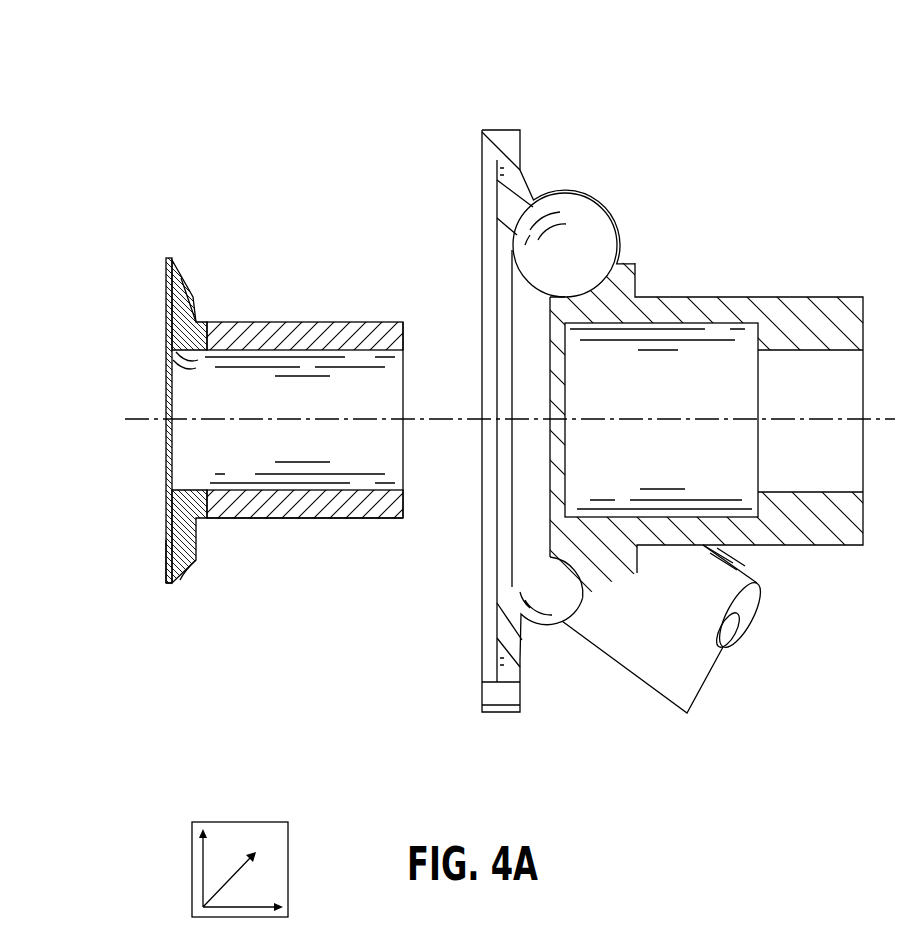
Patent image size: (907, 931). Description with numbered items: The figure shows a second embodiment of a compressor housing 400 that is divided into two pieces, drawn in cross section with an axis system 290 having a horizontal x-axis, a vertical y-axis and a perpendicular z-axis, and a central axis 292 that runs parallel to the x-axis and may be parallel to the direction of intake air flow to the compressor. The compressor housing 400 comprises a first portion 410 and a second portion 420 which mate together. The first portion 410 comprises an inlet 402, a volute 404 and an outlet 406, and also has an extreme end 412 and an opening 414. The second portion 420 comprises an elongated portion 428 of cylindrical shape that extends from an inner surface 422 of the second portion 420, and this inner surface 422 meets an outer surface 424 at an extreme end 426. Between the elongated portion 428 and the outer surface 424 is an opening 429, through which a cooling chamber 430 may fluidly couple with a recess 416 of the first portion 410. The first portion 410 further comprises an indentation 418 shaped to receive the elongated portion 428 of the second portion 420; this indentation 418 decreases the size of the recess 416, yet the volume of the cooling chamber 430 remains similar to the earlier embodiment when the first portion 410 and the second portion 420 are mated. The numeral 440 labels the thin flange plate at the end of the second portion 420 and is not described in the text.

The compressor housing 400 is at (776, 61).
The inlet 402 is at (670, 384).
The volute 404 is at (565, 271).
The outlet 406 is at (677, 622).
The first portion 410 is at (640, 296).
The extreme end 412 is at (482, 150).
The opening 414 is at (472, 233).
The recess 416 is at (559, 517).
The indentation 418 is at (655, 326).
The second portion 420 is at (291, 318).
The inner surface 422 is at (167, 338).
The outer surface 424 is at (190, 566).
The extreme end 426 is at (165, 590).
The elongated portion 428 is at (340, 520).
The opening 429 is at (200, 318).
The cooling chamber 430 is at (178, 493).
The flange plate 440 is at (177, 288).
The central axis 292 is at (130, 418).
The axis system 290 is at (289, 842).